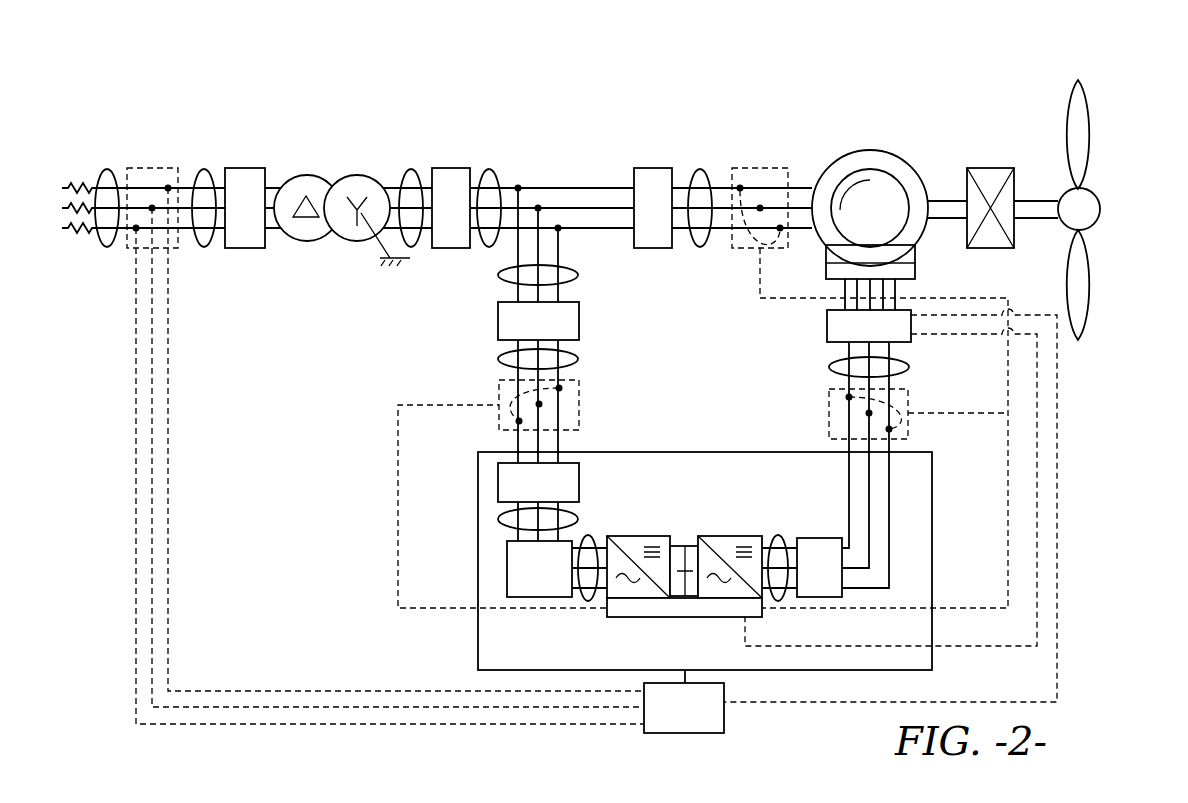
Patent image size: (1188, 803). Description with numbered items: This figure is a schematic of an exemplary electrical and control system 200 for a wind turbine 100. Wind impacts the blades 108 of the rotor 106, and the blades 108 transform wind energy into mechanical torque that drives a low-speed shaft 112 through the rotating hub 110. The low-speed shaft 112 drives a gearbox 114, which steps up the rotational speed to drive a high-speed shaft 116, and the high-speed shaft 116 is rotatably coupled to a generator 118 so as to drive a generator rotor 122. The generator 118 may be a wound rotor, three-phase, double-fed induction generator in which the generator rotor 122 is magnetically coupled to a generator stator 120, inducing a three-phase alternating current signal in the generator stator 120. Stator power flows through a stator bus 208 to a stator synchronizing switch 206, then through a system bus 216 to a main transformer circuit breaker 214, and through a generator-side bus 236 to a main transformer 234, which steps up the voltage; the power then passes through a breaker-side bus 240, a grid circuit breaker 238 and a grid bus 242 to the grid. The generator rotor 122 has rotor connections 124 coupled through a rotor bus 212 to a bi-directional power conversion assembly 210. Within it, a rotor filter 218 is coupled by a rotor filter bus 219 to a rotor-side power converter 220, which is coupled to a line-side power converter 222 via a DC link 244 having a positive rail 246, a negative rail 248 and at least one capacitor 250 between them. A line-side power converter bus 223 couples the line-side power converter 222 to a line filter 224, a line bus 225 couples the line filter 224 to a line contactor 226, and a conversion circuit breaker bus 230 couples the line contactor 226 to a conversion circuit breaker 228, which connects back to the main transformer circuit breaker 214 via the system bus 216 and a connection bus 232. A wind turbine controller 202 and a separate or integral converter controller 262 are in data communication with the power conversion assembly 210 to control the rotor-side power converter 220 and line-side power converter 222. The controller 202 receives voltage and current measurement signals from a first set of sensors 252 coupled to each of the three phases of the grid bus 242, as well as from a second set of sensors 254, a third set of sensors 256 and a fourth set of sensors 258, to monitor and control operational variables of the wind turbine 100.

The wind turbine 100 is at (1116, 194).
The rotor 106 is at (1122, 221).
The blades 108 is at (1090, 130).
The rotating hub 110 is at (1100, 205).
The low-speed shaft 112 is at (1022, 201).
The gearbox 114 is at (990, 168).
The high-speed shaft 116 is at (953, 200).
The generator 118 is at (876, 197).
The generator stator 120 is at (905, 167).
The generator rotor 122 is at (850, 190).
The rotor connections 124 is at (827, 322).
The electrical and control system 200 is at (305, 100).
The wind turbine controller 202 is at (705, 720).
The stator synchronizing switch 206 is at (655, 168).
The stator bus 208 is at (702, 170).
The power conversion assembly 210 is at (932, 535).
The rotor bus 212 is at (908, 367).
The main transformer circuit breaker 214 is at (452, 168).
The system bus 216 is at (490, 170).
The rotor filter 218 is at (808, 538).
The rotor filter bus 219 is at (778, 536).
The rotor-side power converter 220 is at (763, 598).
The line-side power converter 222 is at (605, 598).
The line-side power converter bus 223 is at (590, 536).
The line filter 224 is at (507, 575).
The line bus 225 is at (500, 519).
The line contactor 226 is at (498, 488).
The conversion circuit breaker 228 is at (580, 320).
The conversion circuit breaker bus 230 is at (580, 360).
The connection bus 232 is at (578, 278).
The main transformer 234 is at (350, 176).
The generator-side bus 236 is at (411, 170).
The grid circuit breaker 238 is at (247, 168).
The breaker-side bus 240 is at (207, 170).
The grid bus 242 is at (107, 170).
The DC link 244 is at (692, 502).
The positive rail 246 is at (698, 538).
The negative rail 248 is at (685, 600).
The capacitor 250 is at (683, 556).
The first set of voltage and electric current sensors 252 is at (157, 167).
The second set of voltage and electric current sensors 254 is at (758, 152).
The third set of voltage and electric current sensors 256 is at (829, 413).
The fourth set of voltage and electric current sensors 258 is at (583, 414).
The converter controller 262 is at (658, 612).